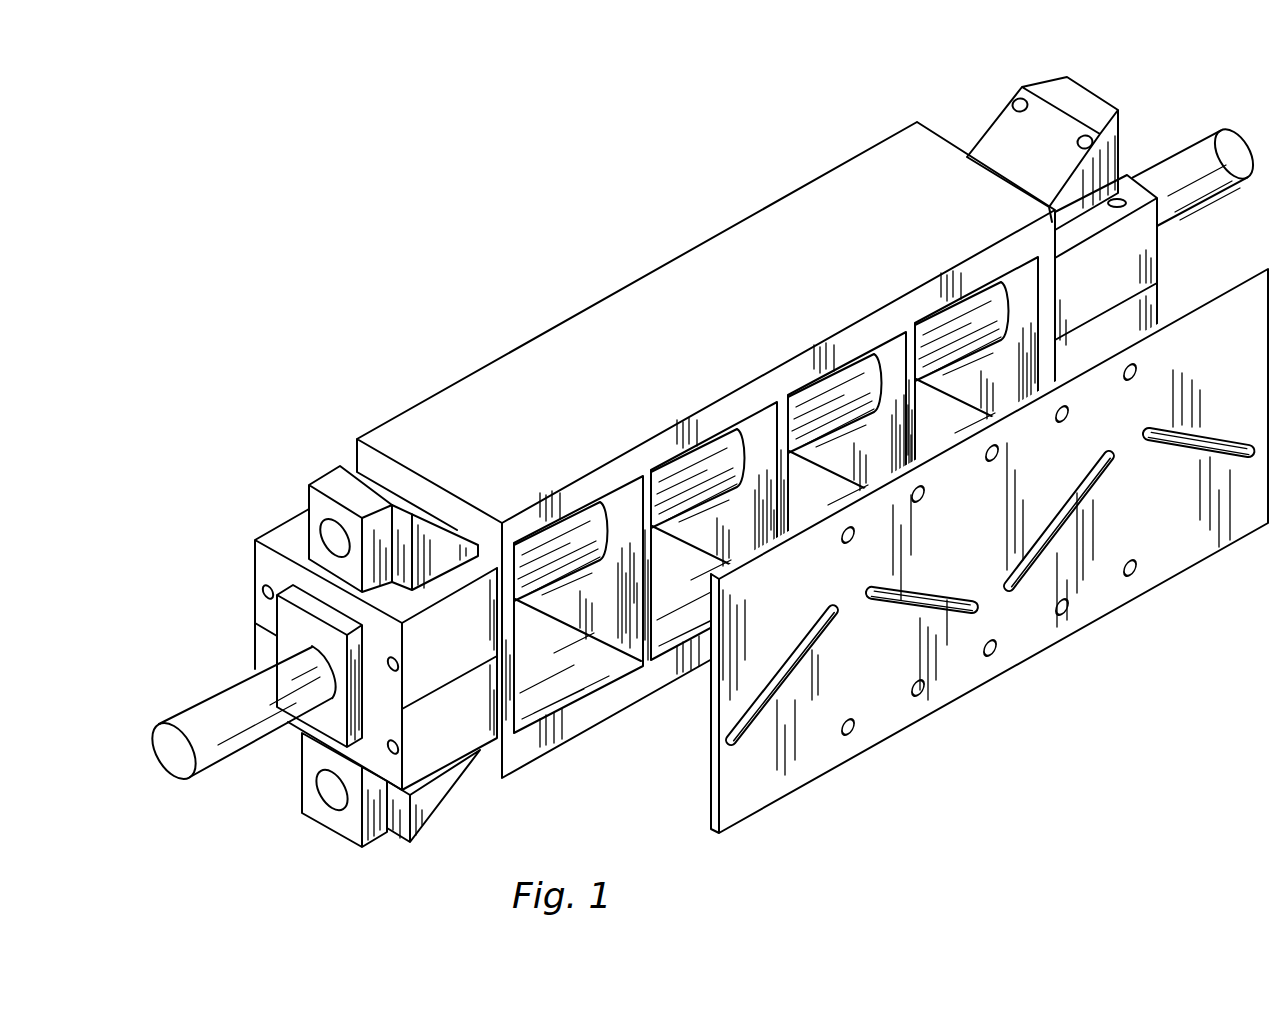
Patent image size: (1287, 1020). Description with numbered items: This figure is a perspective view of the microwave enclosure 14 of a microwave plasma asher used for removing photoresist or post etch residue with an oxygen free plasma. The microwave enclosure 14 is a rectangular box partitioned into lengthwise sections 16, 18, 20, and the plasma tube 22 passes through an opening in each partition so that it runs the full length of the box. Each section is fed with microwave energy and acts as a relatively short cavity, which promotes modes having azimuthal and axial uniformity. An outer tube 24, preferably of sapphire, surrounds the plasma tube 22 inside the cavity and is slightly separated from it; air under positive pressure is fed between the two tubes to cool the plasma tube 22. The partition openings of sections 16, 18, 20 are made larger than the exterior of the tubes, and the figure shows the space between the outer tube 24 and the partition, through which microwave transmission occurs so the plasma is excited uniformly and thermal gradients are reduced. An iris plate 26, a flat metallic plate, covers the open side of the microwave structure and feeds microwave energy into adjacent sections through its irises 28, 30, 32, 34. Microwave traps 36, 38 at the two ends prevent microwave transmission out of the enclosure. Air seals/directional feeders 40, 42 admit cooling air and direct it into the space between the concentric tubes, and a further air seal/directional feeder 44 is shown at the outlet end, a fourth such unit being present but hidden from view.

The microwave enclosure 14 is at (630, 707).
The lengthwise section 16 is at (665, 468).
The lengthwise section 18 is at (795, 396).
The lengthwise section 20 is at (928, 332).
The plasma tube 22 is at (228, 735).
The outer tube 24 is at (556, 568).
The iris plate 26 is at (1037, 657).
The iris 28 is at (790, 652).
The iris 30 is at (940, 598).
The iris 32 is at (1060, 524).
The iris 34 is at (1174, 453).
The microwave trap 36 is at (1160, 247).
The microwave trap 38 is at (255, 607).
The air seal/directional feeder 40 is at (305, 500).
The air seal/directional feeder 42 is at (304, 816).
The air seal/directional feeder 44 is at (1103, 99).